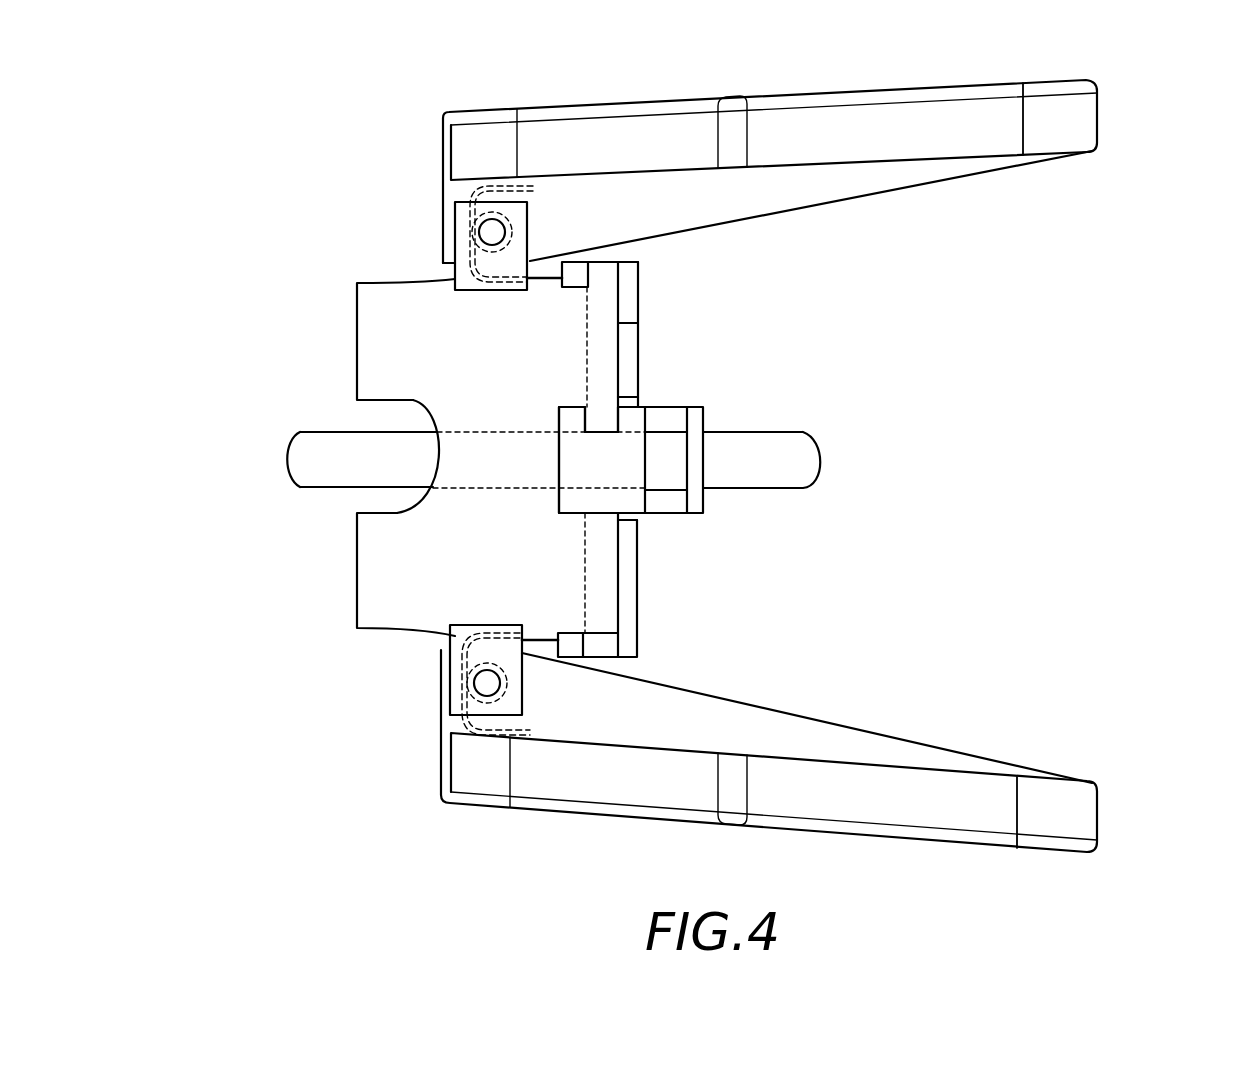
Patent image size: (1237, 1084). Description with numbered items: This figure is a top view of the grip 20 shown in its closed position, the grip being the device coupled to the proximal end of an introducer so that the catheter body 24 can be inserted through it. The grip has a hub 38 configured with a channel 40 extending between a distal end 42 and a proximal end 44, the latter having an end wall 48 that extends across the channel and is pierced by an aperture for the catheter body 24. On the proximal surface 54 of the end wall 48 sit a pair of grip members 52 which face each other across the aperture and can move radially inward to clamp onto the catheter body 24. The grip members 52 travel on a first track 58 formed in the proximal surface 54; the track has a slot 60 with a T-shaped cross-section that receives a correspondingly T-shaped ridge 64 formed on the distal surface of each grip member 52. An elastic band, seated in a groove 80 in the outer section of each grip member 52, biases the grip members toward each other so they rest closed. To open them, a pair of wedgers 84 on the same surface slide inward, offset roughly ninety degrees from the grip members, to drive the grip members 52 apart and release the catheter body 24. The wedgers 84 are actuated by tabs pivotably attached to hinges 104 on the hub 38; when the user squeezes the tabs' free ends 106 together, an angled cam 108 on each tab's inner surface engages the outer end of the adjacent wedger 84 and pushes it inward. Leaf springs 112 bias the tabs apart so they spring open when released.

The grip 20 is at (312, 340).
The catheter body 24 is at (338, 447).
The hub 38 is at (420, 338).
The channel 40 is at (382, 500).
The distal end 42 is at (352, 588).
The proximal end 44 is at (603, 375).
The end wall 48 is at (602, 612).
The grip members 52 is at (577, 475).
The proximal surface 54 is at (628, 323).
The first track 58 is at (560, 447).
The slot 60 is at (557, 465).
The ridge 64 is at (572, 417).
The groove 80 is at (668, 457).
The wedgers 84 is at (628, 275).
The hinges 104 is at (487, 232).
The free ends 106 is at (1080, 118).
The cam 108 is at (818, 187).
The leaf springs 112 is at (473, 193).